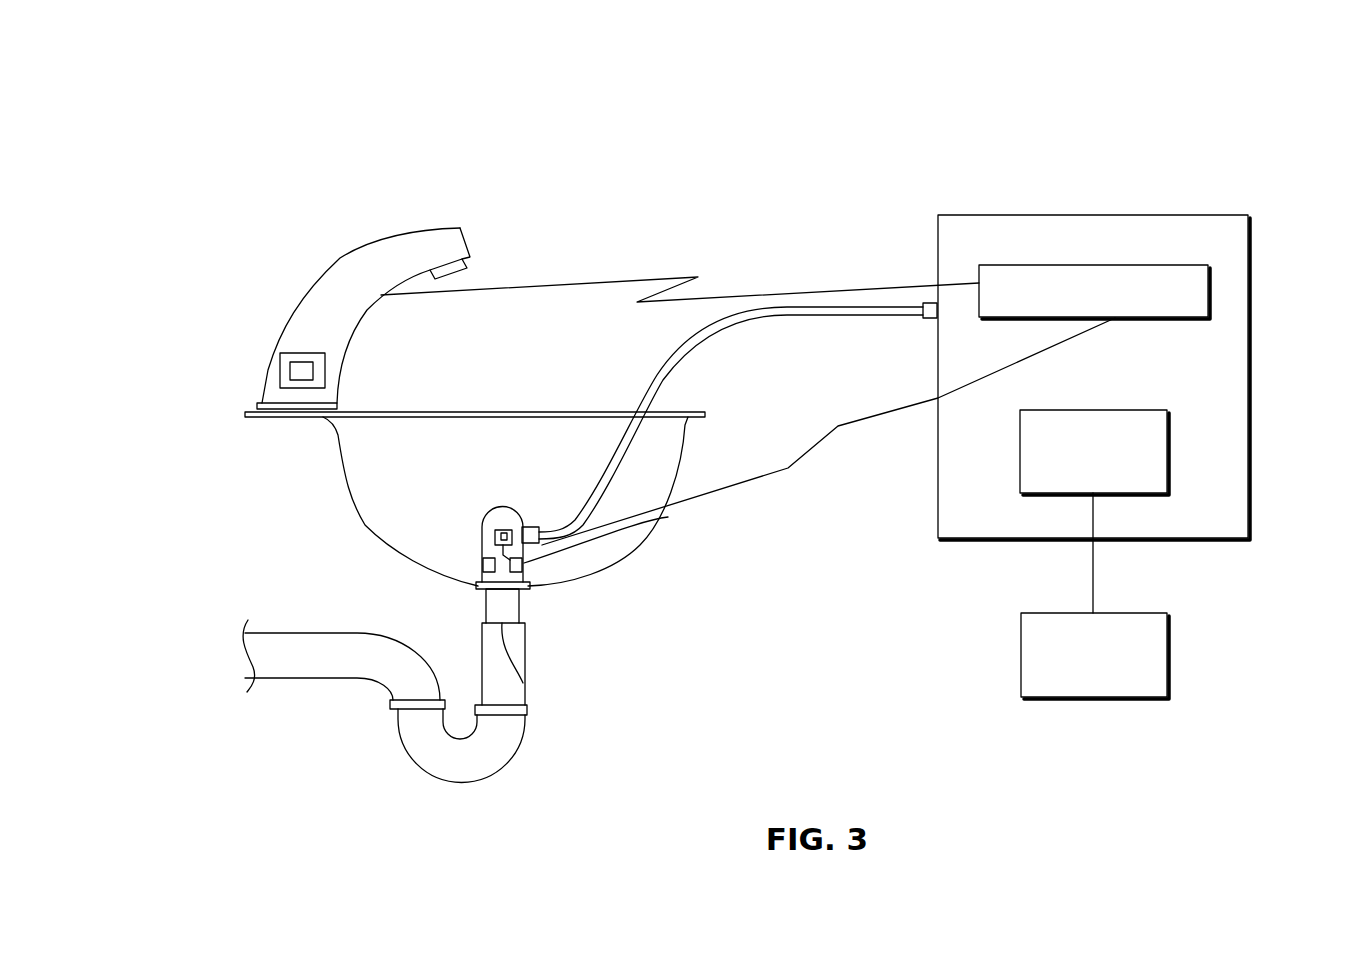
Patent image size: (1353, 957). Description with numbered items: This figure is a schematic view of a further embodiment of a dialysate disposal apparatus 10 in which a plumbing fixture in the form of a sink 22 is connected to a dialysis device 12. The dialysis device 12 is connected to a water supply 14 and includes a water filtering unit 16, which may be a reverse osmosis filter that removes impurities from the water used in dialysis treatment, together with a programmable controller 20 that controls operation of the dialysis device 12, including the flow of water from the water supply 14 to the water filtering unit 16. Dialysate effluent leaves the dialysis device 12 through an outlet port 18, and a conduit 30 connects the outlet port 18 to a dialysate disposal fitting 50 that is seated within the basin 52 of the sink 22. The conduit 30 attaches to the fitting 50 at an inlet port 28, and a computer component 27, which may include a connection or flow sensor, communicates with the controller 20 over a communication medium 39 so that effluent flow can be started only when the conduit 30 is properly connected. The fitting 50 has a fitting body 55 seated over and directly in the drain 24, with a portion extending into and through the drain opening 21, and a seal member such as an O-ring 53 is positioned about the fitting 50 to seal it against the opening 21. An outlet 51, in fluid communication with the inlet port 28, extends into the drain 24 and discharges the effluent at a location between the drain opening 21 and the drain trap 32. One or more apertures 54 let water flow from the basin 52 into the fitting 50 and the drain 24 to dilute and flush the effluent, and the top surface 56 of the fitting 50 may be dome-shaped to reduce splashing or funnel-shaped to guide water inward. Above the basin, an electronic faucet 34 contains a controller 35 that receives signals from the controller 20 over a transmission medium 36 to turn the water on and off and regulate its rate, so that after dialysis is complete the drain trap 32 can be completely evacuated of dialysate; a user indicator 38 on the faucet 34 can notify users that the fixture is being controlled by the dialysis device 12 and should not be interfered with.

The dialysate disposal apparatus 10 is at (1074, 111).
The dialysis device 12 is at (1252, 345).
The water supply 14 is at (1075, 613).
The water filtering unit 16 is at (1078, 410).
The outlet port 18 is at (930, 318).
The controller 20 is at (1035, 265).
The drain opening 21 is at (531, 588).
The sink 22 is at (373, 510).
The drain 24 is at (526, 648).
The computer component 27 is at (668, 518).
The inlet port 28 is at (535, 527).
The conduit 30 is at (733, 325).
The drain trap 32 is at (470, 773).
The faucet 34 is at (380, 239).
The controller 35 is at (305, 371).
The transmission medium 36 is at (780, 292).
The user indicator 38 is at (303, 353).
The communication medium 39 is at (852, 440).
The dialysate disposal fitting 50 is at (481, 536).
The outlet 51 is at (527, 687).
The basin 52 is at (350, 483).
The O-ring 53 is at (529, 583).
The apertures 54 is at (483, 566).
The fitting body 55 is at (507, 520).
The top surface 56 is at (507, 520).